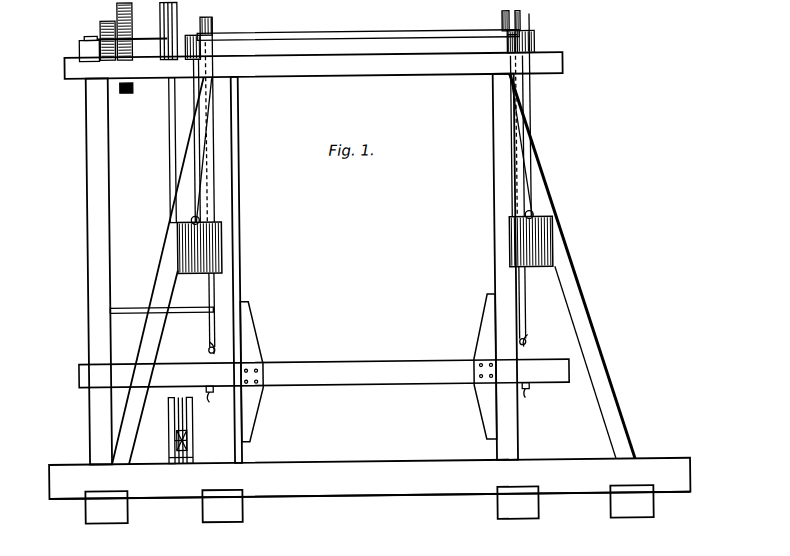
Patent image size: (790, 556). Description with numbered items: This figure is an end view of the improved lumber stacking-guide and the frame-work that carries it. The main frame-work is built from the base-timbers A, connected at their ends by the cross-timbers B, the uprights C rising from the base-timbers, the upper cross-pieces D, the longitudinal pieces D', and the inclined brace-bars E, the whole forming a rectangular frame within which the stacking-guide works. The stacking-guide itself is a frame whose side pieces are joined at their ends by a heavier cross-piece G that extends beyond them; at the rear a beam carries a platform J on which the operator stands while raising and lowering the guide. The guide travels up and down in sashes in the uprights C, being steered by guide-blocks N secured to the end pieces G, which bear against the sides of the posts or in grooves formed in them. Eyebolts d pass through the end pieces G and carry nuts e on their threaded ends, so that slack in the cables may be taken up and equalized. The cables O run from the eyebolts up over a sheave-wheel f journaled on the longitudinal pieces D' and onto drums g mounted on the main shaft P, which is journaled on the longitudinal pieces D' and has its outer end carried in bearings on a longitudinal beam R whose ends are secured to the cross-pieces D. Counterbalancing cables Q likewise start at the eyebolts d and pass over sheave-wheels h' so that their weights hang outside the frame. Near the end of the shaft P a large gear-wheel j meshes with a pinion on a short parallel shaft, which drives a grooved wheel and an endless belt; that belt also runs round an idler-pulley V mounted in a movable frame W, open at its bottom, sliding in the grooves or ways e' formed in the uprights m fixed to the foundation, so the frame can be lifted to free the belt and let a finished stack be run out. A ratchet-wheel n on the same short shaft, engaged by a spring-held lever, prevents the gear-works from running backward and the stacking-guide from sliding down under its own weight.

The base-timbers A is at (355, 516).
The cross-timbers B is at (369, 478).
The uprights C is at (291, 269).
The upper cross-pieces D is at (313, 78).
The longitudinal pieces D' is at (358, 56).
The inclined brace-bars E is at (163, 272).
The cross-piece G is at (324, 387).
The platform J is at (161, 301).
The guide-blocks N is at (256, 414).
The cables O is at (212, 108).
The main shaft P is at (358, 23).
The cables Q is at (543, 114).
The longitudinal beam R is at (82, 50).
The idler-pulley V is at (186, 438).
The movable frame W is at (170, 418).
The eyebolts d is at (208, 348).
The nuts e is at (375, 398).
The grooves or ways e' is at (168, 438).
The sheave-wheel f is at (510, 38).
The drums g is at (217, 24).
The sheave-wheels h' is at (363, 32).
The large gear-wheel j is at (155, 30).
The weights l is at (365, 241).
The uprights m is at (168, 455).
The ratchet-wheel n is at (89, 37).
The guide bar u is at (170, 152).